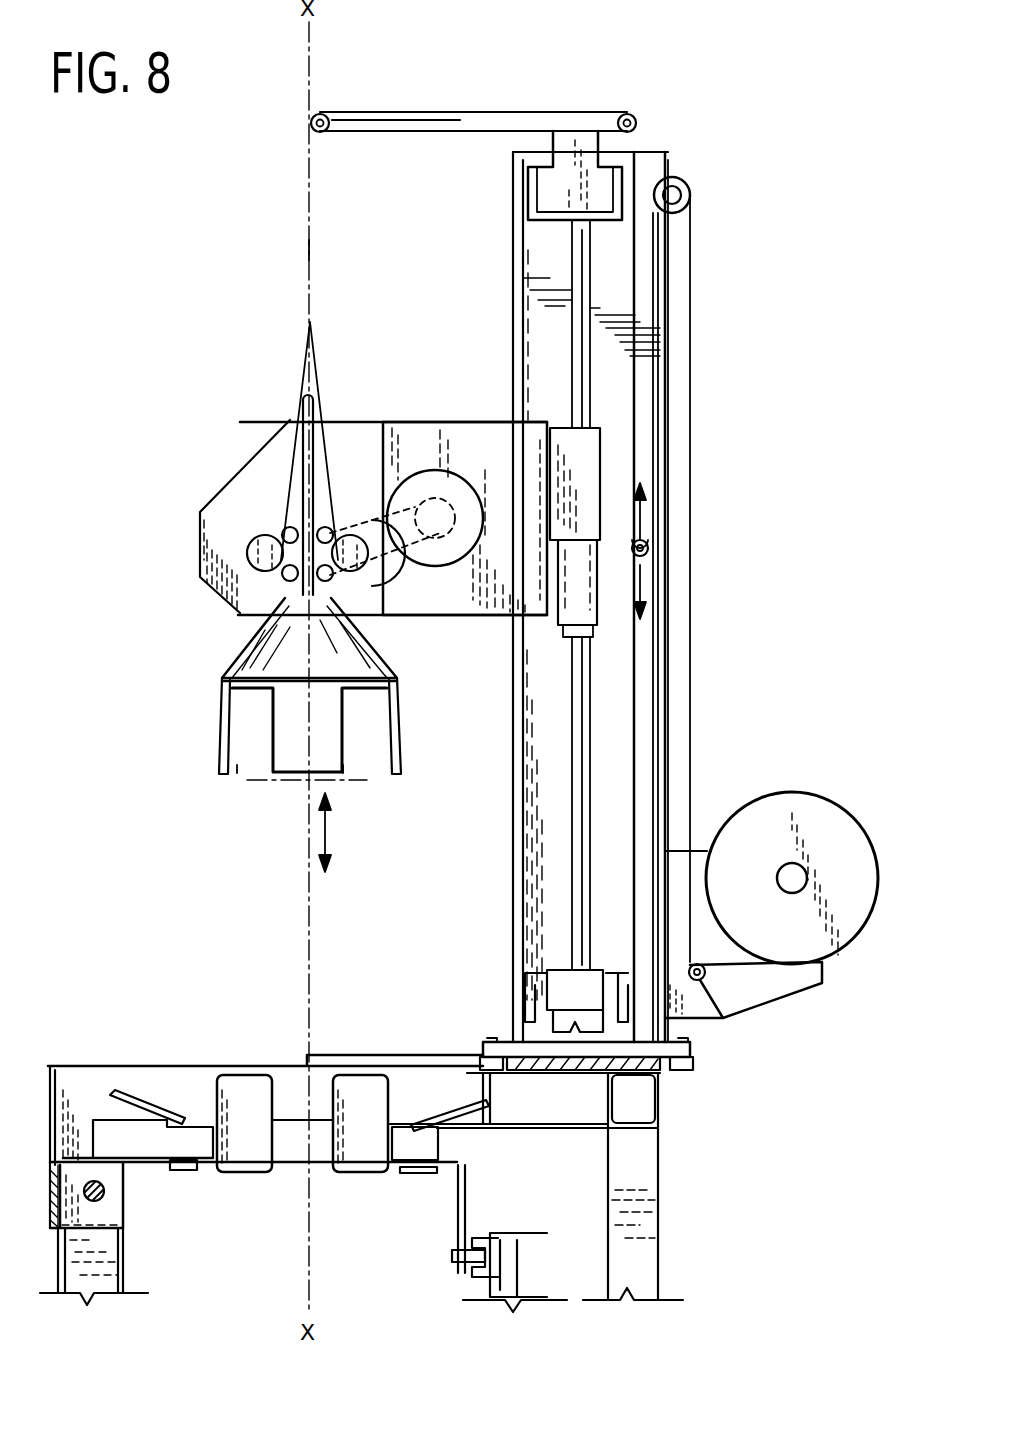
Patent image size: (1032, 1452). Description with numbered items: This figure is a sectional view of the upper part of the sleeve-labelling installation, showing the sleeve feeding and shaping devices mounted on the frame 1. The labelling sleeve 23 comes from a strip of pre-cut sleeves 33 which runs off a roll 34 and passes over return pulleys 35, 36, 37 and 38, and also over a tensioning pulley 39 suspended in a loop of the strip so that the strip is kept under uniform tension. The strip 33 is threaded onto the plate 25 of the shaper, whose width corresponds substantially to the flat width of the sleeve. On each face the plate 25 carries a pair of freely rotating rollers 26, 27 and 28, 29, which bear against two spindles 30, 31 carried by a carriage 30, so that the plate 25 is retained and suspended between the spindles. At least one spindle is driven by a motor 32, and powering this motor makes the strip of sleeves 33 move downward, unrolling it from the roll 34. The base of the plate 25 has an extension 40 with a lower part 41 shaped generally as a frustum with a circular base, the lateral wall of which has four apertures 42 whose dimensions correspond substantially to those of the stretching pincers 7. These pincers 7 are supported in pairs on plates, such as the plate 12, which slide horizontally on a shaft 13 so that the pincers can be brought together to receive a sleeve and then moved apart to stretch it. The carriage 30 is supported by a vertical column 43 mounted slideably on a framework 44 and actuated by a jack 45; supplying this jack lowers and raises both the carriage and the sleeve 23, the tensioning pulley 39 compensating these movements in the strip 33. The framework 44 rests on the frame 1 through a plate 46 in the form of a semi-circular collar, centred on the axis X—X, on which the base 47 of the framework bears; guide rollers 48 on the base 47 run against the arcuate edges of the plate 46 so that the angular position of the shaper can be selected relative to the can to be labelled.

The frame 1 is at (545, 1275).
The stretching pincers 7 is at (345, 1080).
The plate 12 is at (317, 1168).
The shaft 13 is at (104, 1190).
The labelling sleeve 23 is at (223, 720).
The plate 25 is at (305, 432).
The roller 26 is at (283, 533).
The roller 27 is at (283, 574).
The roller 28 is at (330, 528).
The roller 29 is at (345, 585).
The spindle / carriage 30 is at (247, 477).
The spindle 31 is at (380, 570).
The motor 32 is at (438, 475).
The strip of pre-cut sleeves 33 is at (468, 112).
The roll 34 is at (780, 795).
The return pulley 35 is at (718, 968).
The return pulley 36 is at (688, 188).
The return pulley 37 is at (635, 116).
The return pulley 38 is at (328, 116).
The tensioning pulley 39 is at (647, 555).
The extension 40 is at (292, 640).
The lower part 41 is at (223, 748).
The apertures 42 is at (233, 762).
The vertical column 43 is at (578, 735).
The framework 44 is at (545, 700).
The jack 45 is at (550, 997).
The plate 46 is at (640, 1090).
The base 47 is at (667, 1043).
The guide rollers 48 is at (490, 1058).